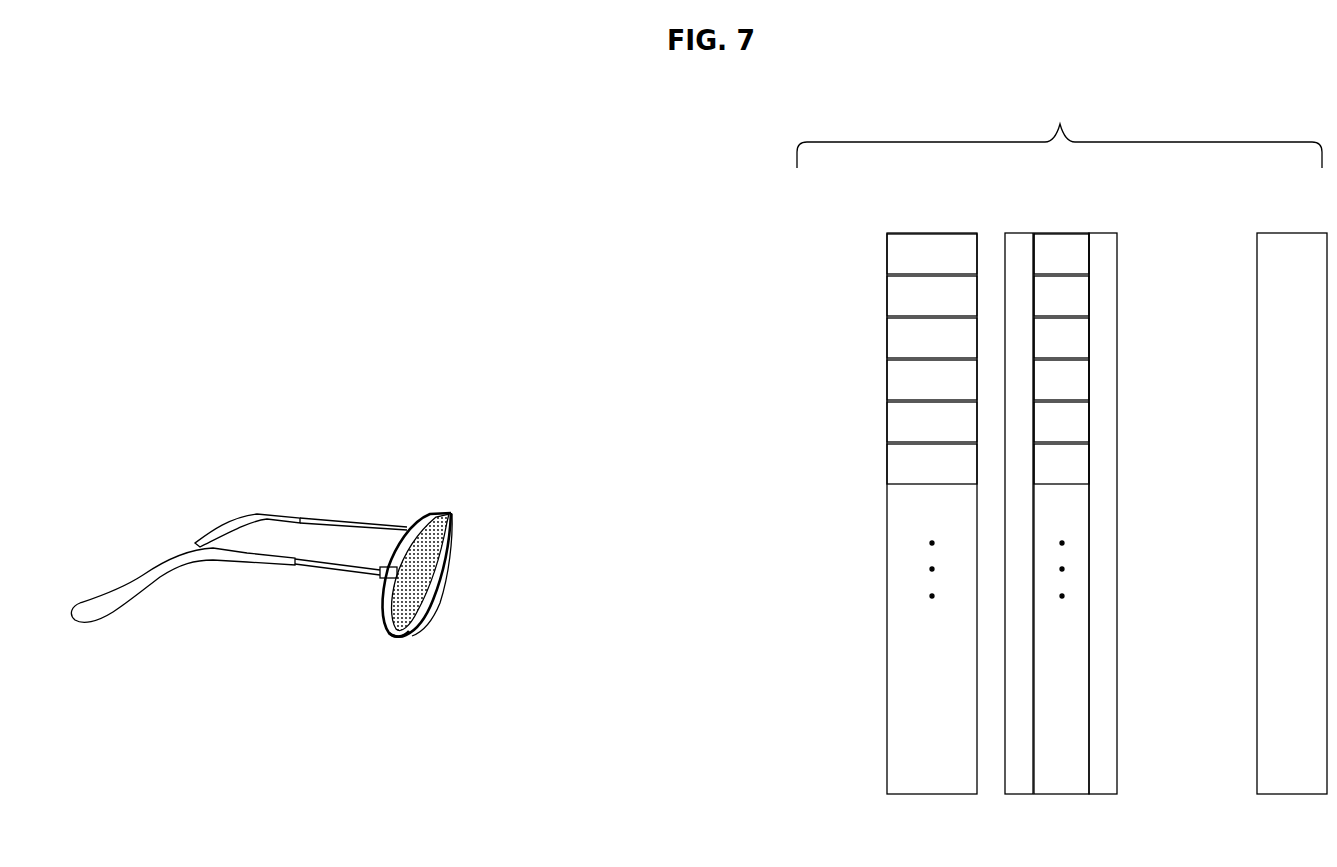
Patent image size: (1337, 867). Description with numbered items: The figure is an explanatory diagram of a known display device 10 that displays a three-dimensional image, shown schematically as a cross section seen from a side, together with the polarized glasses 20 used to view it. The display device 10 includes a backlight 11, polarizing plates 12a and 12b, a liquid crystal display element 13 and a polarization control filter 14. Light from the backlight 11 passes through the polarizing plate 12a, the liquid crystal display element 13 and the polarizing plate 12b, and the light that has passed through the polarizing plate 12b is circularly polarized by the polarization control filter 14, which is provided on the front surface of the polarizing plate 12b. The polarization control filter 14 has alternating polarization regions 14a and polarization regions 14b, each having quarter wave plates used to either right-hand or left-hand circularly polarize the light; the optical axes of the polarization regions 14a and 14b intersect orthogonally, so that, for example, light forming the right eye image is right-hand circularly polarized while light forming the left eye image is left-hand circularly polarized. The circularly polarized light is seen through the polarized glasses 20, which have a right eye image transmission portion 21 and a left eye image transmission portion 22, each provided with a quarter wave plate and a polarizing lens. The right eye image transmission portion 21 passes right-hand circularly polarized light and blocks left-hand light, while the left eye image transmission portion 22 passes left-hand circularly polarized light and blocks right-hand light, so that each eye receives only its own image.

The display device 10 is at (1060, 124).
The backlight 11 is at (1290, 233).
The polarizing plate 12a is at (1107, 233).
The polarizing plate 12b is at (1013, 233).
The liquid crystal display element 13 is at (1060, 233).
The polarization control filter 14 is at (931, 233).
The polarization region 14a is at (891, 253).
The polarization region 14b is at (891, 295).
The polarized glasses 20 is at (379, 463).
The right eye image transmission portion 21 is at (400, 597).
The left eye image transmission portion 22 is at (453, 522).